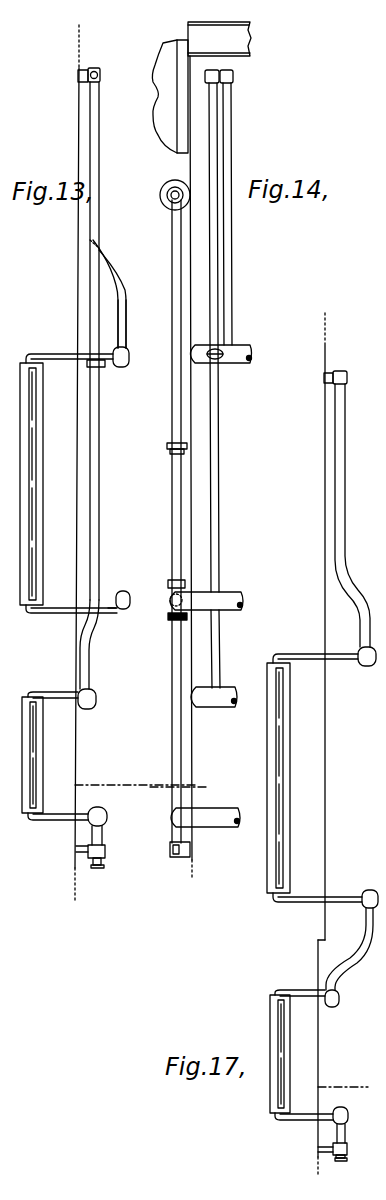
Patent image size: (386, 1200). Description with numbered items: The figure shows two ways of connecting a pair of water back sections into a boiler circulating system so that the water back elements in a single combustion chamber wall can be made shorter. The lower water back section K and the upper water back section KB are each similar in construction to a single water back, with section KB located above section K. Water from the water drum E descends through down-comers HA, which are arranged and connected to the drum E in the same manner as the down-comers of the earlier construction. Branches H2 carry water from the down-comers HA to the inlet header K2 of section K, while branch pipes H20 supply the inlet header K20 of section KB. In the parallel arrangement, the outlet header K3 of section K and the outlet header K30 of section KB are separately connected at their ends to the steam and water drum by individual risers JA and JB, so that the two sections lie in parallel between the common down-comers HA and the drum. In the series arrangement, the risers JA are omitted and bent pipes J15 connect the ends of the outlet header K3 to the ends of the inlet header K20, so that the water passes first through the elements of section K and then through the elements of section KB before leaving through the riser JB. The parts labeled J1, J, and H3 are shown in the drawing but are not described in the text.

In FIG. 13, the tube connection fitting J' J1 is at (88, 70).
In FIG. 17, the tube connection fitting J' J1 is at (328, 373).
In FIG. 13, the riser JA is at (100, 441).
In FIG. 14, the riser JA is at (218, 258).
In FIG. 13, the riser JB is at (104, 258).
In FIG. 14, the riser JB is at (229, 286).
In FIG. 17, the riser JB is at (346, 558).
In FIG. 13, the tube J is at (126, 322).
In FIG. 17, the bent pipe J15 is at (340, 960).
In FIG. 13, the outlet header K30 is at (124, 367).
In FIG. 14, the outlet header K30 is at (238, 364).
In FIG. 17, the outlet header K30 is at (367, 667).
In FIG. 13, the inlet header K20 is at (121, 609).
In FIG. 14, the inlet header K20 is at (237, 593).
In FIG. 17, the inlet header K20 is at (370, 890).
In FIG. 13, the outlet header K3 is at (96, 699).
In FIG. 14, the outlet header K3 is at (208, 707).
In FIG. 17, the outlet header K3 is at (339, 999).
In FIG. 13, the inlet header K2 is at (107, 816).
In FIG. 14, the inlet header K2 is at (226, 808).
In FIG. 17, the inlet header K2 is at (348, 1112).
In FIG. 13, the water back section K is at (28, 773).
In FIG. 17, the water back section K is at (275, 1042).
In FIG. 13, the water back section KB is at (30, 500).
In FIG. 17, the water back section KB is at (272, 798).
In FIG. 13, the branch pipe H20 is at (112, 596).
In FIG. 14, the branch pipe H20 is at (194, 590).
In FIG. 13, the valve H3 is at (106, 848).
In FIG. 14, the valve H3 is at (184, 836).
In FIG. 17, the valve H3 is at (346, 1134).
In FIG. 13, the branch H2 is at (80, 852).
In FIG. 17, the branch H2 is at (327, 1153).
In FIG. 14, the down-comer HA is at (173, 515).
In FIG. 14, the water drum E is at (183, 97).